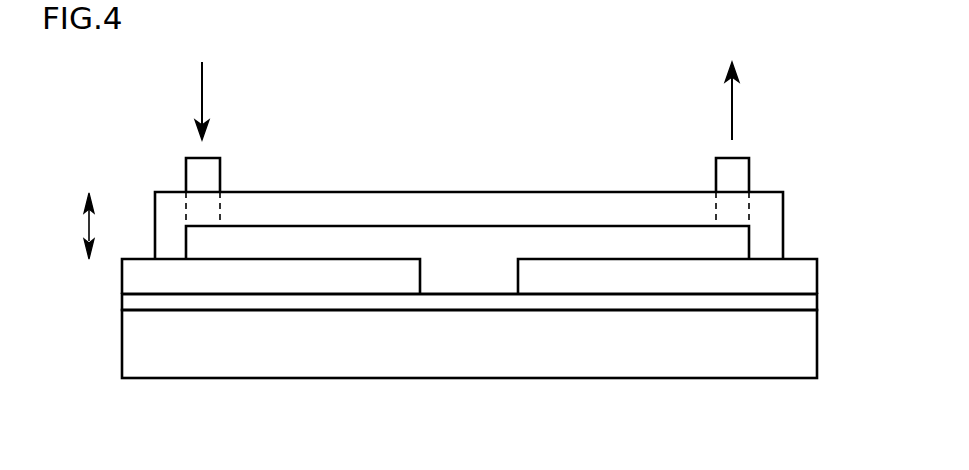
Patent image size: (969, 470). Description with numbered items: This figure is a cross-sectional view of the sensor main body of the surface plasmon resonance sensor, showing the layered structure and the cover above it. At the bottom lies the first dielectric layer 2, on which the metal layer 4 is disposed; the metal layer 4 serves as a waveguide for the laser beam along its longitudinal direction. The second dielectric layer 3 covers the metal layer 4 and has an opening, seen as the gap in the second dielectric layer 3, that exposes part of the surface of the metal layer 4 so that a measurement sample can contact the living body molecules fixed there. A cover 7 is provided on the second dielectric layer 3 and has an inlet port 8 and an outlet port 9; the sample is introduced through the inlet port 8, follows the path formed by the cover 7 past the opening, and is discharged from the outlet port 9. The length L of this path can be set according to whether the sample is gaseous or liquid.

The first dielectric layer 2 is at (138, 345).
The second dielectric layer 3 is at (138, 277).
The metal layer 4 is at (138, 303).
The cover 7 is at (468, 207).
The inlet port 8 is at (210, 170).
The outlet port 9 is at (740, 170).
The length L is at (84, 228).